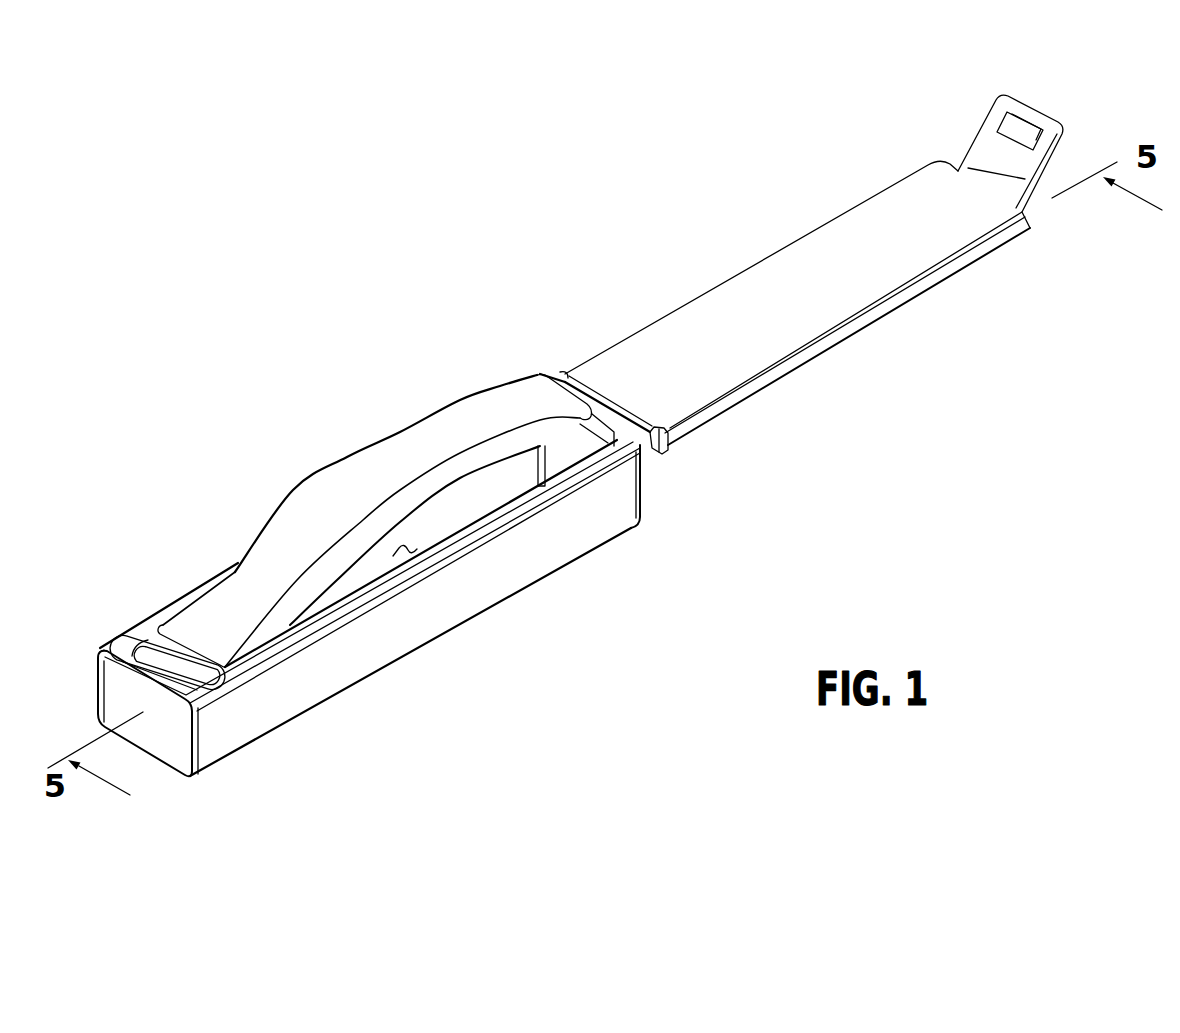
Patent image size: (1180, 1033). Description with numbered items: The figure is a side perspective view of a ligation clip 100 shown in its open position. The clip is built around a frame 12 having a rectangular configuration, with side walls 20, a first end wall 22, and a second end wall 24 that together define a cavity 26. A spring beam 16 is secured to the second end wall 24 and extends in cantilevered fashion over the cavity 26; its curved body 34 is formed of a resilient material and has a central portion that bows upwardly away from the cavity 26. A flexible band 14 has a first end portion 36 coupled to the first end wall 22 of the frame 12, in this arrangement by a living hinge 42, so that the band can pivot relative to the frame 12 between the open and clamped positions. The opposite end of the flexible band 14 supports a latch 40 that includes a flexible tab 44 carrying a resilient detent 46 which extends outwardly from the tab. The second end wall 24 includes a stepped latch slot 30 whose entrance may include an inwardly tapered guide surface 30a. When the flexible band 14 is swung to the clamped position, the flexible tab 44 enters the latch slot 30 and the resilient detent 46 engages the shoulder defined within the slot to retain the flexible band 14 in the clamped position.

The ligation clip 100 is at (463, 202).
The frame 12 is at (491, 626).
The flexible band 14 is at (848, 336).
The spring beam 16 is at (341, 443).
The side walls 20 is at (177, 607).
The first end wall 22 is at (610, 435).
The second end wall 24 is at (172, 718).
The cavity 26 is at (403, 557).
The latch slot 30 is at (173, 680).
The inwardly tapered guide surface 30a is at (142, 649).
The curved body 34 is at (435, 438).
The first end portion 36 is at (590, 378).
The latch 40 is at (968, 109).
The living hinge 42 is at (635, 430).
The flexible tab 44 is at (1012, 195).
The resilient detent 46 is at (1022, 123).